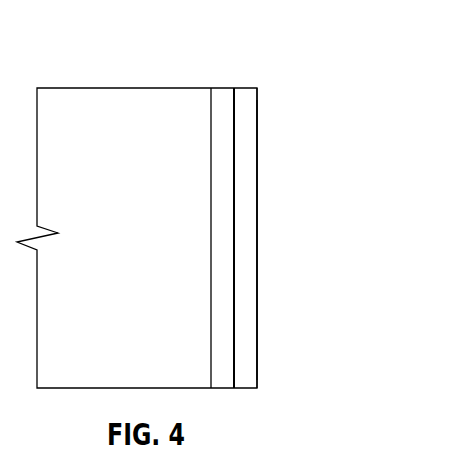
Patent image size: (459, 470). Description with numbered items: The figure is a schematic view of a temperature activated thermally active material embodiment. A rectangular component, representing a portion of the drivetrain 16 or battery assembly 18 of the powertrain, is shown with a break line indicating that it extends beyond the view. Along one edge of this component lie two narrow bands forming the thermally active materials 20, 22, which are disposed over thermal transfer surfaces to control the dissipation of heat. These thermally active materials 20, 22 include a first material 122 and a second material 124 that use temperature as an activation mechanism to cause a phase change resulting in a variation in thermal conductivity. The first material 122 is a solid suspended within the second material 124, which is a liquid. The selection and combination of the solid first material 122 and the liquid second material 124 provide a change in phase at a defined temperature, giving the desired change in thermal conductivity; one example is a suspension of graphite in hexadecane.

The drivetrain 16 is at (137, 202).
The battery assembly 18 is at (142, 100).
The thermally active material 20 is at (316, 233).
The thermally active material 22 is at (267, 118).
The first material 122 is at (227, 93).
The second material 124 is at (245, 93).